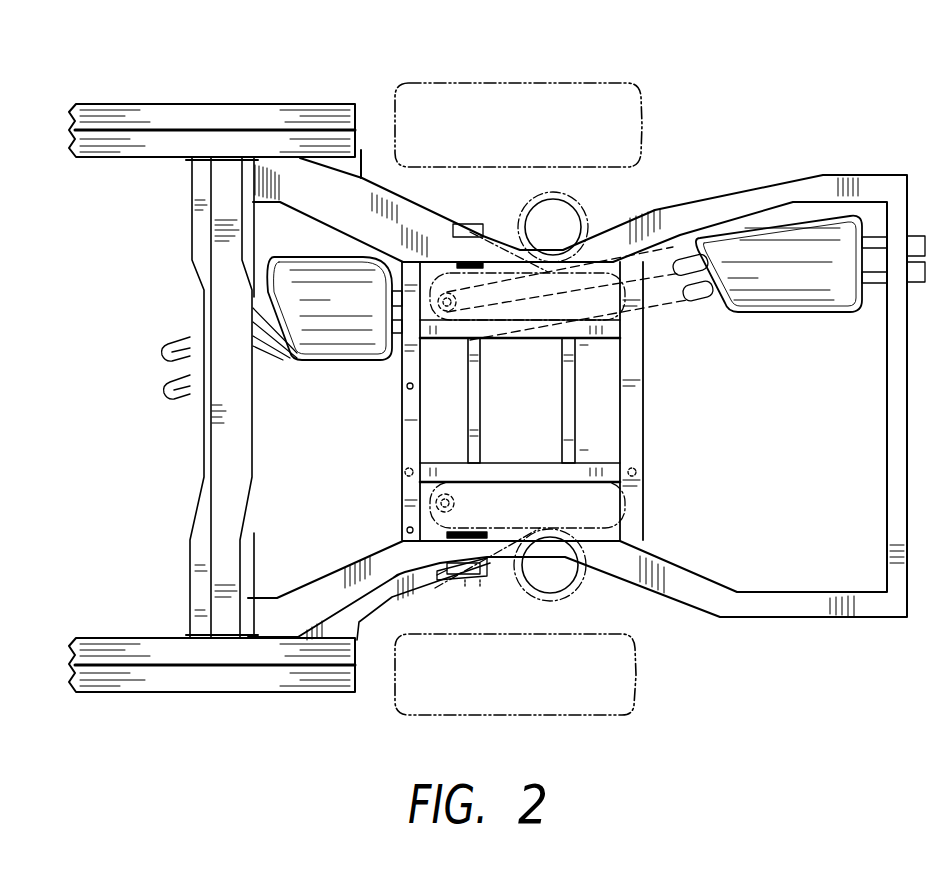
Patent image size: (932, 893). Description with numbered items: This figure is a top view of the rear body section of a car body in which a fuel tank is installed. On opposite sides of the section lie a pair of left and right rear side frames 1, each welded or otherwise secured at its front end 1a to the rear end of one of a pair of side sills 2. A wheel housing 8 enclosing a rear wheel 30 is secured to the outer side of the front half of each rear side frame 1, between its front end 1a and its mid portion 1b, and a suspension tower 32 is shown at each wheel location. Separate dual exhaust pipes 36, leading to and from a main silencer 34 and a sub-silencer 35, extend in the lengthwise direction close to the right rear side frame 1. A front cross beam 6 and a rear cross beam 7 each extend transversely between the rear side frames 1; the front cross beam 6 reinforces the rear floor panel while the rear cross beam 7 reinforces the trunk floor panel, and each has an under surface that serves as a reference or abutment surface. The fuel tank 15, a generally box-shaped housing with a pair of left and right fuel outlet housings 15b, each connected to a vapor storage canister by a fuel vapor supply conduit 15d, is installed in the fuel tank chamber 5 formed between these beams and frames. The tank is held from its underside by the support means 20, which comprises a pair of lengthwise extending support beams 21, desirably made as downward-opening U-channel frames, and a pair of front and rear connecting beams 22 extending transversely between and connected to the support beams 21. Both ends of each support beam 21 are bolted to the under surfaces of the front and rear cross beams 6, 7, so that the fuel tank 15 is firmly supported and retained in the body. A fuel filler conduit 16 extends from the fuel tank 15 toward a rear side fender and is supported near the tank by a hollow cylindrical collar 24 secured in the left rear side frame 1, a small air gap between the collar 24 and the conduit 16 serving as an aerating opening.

The rear side frame 1 is at (752, 174).
The front end 1a is at (258, 186).
The mid portion 1b is at (513, 245).
The side sill 2 is at (183, 103).
The fuel tank chamber 5 is at (607, 437).
The front cross beam 6 is at (402, 432).
The rear cross beam 7 is at (646, 460).
The wheel housing 8 is at (413, 214).
The fuel tank 15 is at (647, 381).
The fuel outlet housing 15b is at (406, 384).
The fuel vapor supply conduit 15d is at (404, 490).
The fuel filler conduit 16 is at (462, 584).
The support means 20 is at (556, 318).
The support beam 21 is at (548, 346).
The connecting beam 22 is at (423, 433).
The collar 24 is at (437, 578).
The rear wheel 30 is at (658, 86).
The suspension tower 32 is at (580, 203).
The main silencer 34 is at (813, 297).
The sub-silencer 35 is at (316, 358).
The exhaust pipe 36 is at (697, 296).